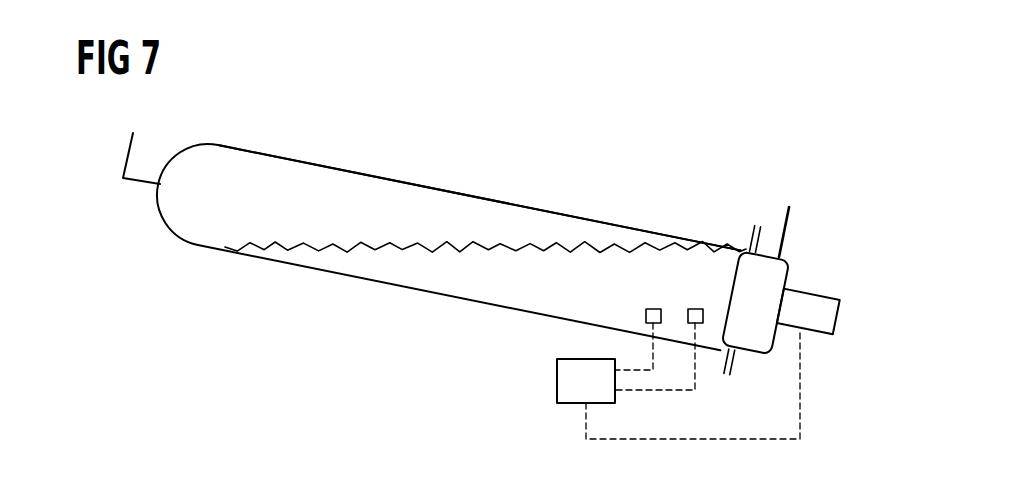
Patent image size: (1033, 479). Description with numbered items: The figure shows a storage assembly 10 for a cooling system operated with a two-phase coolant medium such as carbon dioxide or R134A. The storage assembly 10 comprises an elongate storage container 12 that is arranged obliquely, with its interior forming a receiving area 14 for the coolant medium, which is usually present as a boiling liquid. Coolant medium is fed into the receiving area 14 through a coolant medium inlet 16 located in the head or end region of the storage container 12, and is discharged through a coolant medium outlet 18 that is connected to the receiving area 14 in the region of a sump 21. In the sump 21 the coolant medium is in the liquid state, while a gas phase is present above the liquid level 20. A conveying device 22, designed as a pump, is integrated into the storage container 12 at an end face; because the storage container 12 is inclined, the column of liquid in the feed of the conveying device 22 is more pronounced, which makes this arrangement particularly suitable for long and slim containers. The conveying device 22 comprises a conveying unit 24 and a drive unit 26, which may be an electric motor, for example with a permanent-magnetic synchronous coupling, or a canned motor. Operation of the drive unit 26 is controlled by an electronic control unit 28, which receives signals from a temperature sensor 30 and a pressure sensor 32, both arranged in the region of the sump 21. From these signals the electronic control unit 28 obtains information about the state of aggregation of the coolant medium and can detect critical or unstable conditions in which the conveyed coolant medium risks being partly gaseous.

The storage assembly 10 is at (555, 178).
The storage container 12 is at (348, 170).
The receiving area 14 is at (423, 197).
The coolant medium inlet 16 is at (123, 152).
The coolant medium outlet 18 is at (790, 220).
The liquid level 20 is at (358, 245).
The sump 21 is at (723, 280).
The conveying device 22 is at (808, 272).
The conveying unit 24 is at (755, 347).
The drive unit 26 is at (830, 317).
The electronic control unit 28 is at (557, 380).
The temperature sensor 30 is at (650, 308).
The pressure sensor 32 is at (693, 308).